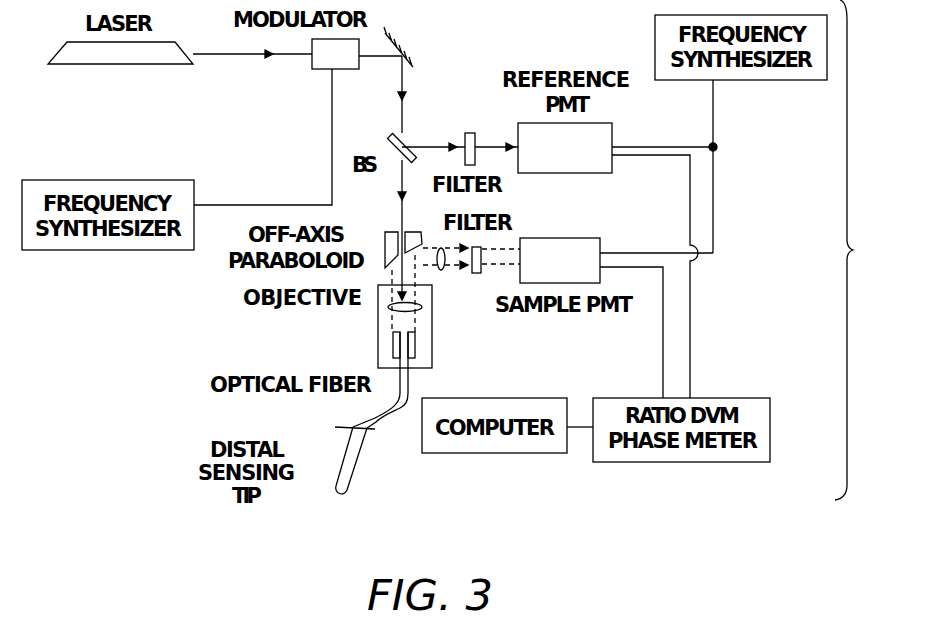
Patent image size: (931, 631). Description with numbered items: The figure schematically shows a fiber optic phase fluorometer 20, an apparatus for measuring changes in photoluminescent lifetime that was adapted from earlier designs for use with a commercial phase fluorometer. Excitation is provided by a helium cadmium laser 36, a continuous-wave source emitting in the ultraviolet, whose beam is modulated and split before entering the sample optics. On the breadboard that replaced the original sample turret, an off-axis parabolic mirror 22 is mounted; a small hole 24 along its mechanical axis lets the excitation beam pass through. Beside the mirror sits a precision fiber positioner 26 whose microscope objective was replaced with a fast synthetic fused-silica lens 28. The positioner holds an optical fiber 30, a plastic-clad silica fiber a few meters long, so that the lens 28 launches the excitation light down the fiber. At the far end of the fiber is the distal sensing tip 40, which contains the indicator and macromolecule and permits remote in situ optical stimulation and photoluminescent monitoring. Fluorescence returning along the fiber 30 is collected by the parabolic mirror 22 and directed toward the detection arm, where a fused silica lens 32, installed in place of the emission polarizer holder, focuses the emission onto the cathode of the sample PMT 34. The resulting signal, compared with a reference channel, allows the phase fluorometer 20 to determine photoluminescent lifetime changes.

The fiber optic phase fluorometer 20 is at (862, 250).
The off-axis parabolic mirror 22 is at (387, 260).
The hole 24 is at (398, 231).
The precision fiber positioner 26 is at (432, 340).
The synthetic fused-silica lens 28 is at (390, 307).
The optical fiber 30 is at (406, 402).
The fused silica lens 32 is at (443, 269).
The sample PMT 34 is at (592, 237).
The helium cadmium laser 36 is at (130, 65).
The distal sensing tip 40 is at (348, 487).